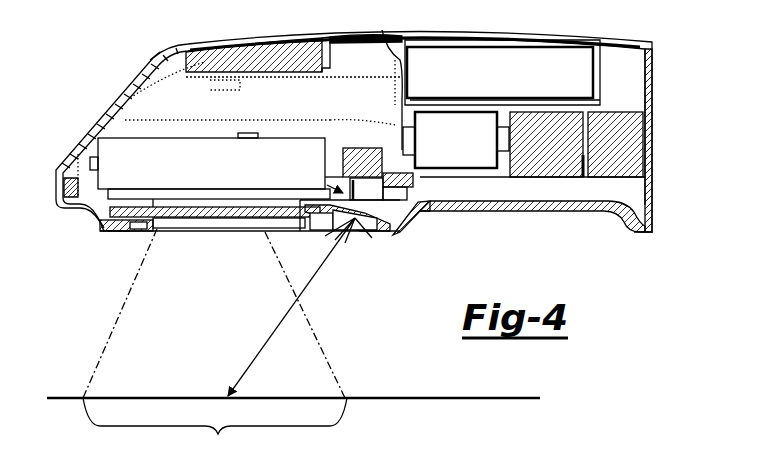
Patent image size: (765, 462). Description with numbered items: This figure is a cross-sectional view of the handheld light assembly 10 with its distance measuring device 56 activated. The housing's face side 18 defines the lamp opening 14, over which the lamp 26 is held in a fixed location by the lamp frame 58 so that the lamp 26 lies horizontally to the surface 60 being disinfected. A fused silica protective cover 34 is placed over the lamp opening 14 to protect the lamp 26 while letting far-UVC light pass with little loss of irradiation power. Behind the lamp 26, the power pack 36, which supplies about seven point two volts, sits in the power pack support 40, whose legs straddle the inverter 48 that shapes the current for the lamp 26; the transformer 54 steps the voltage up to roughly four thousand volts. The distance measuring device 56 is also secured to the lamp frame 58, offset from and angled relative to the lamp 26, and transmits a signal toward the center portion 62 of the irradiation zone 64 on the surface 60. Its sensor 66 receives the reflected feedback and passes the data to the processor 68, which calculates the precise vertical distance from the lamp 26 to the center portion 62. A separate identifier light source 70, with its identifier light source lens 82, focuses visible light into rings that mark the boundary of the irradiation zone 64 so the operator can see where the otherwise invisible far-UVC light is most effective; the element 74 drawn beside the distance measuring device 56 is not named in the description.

The handheld light assembly 10 is at (143, 50).
The lamp opening 14 is at (220, 232).
The face side 18 is at (533, 212).
The lamp 26 is at (197, 173).
The fused silica protective cover 34 is at (193, 217).
The power pack 36 is at (503, 82).
The power pack support 40 is at (382, 30).
The inverter 48 is at (566, 144).
The transformer 54 is at (463, 144).
The distance measuring device 56 is at (355, 229).
The lamp frame 58 is at (100, 232).
The surface 60 is at (378, 398).
The center portion 62 is at (227, 396).
The irradiation zone 64 is at (215, 430).
The sensor 66 is at (338, 232).
The processor 68 is at (240, 78).
The identifier light source 70 is at (100, 230).
The light source 74 is at (352, 234).
The identifier light source lens 82 is at (117, 234).